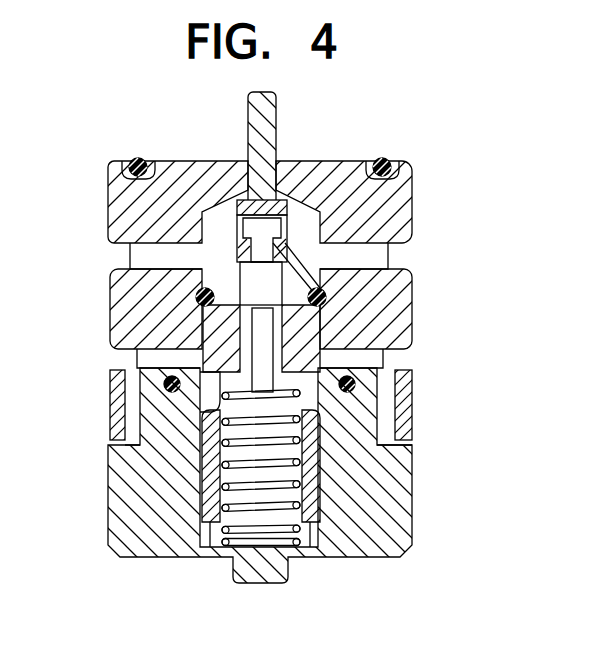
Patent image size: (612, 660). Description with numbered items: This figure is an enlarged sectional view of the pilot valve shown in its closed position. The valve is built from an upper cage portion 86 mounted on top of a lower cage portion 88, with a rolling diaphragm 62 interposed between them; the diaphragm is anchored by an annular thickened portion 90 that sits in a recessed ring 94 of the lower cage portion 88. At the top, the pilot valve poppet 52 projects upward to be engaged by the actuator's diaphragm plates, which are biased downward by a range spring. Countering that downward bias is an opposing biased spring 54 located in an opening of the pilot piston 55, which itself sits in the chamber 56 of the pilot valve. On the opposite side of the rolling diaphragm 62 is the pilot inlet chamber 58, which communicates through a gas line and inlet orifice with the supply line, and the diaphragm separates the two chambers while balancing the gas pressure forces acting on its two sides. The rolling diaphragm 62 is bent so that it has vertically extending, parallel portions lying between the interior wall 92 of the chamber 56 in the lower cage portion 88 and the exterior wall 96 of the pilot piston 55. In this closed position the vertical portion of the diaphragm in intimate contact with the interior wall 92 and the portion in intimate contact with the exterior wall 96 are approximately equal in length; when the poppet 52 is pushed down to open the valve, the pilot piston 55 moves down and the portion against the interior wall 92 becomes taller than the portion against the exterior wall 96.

The pilot valve poppet 52 is at (277, 118).
The biased spring 54 is at (322, 538).
The pilot piston 55 is at (323, 487).
The chamber 56 is at (214, 548).
The pilot inlet chamber 58 is at (330, 290).
The rolling diaphragm 62 is at (412, 333).
The upper cage portion 86 is at (413, 227).
The lower cage portion 88 is at (338, 558).
The annular thickened portion 90 is at (406, 386).
The interior wall 92 is at (208, 434).
The recessed ring 94 is at (413, 414).
The exterior wall 96 is at (402, 452).